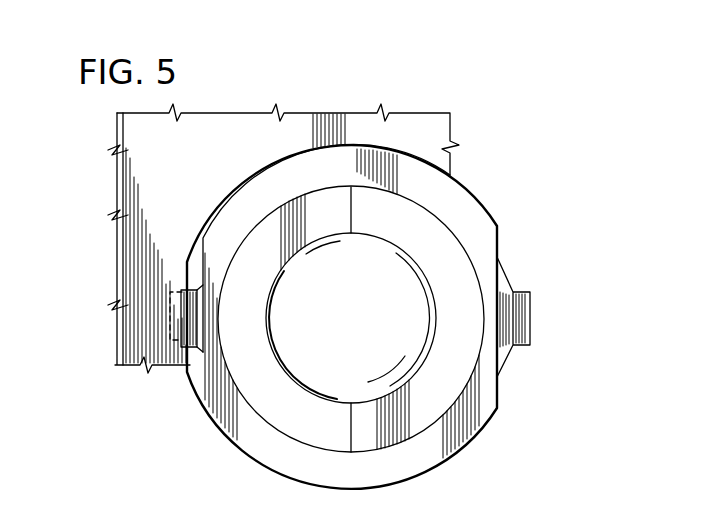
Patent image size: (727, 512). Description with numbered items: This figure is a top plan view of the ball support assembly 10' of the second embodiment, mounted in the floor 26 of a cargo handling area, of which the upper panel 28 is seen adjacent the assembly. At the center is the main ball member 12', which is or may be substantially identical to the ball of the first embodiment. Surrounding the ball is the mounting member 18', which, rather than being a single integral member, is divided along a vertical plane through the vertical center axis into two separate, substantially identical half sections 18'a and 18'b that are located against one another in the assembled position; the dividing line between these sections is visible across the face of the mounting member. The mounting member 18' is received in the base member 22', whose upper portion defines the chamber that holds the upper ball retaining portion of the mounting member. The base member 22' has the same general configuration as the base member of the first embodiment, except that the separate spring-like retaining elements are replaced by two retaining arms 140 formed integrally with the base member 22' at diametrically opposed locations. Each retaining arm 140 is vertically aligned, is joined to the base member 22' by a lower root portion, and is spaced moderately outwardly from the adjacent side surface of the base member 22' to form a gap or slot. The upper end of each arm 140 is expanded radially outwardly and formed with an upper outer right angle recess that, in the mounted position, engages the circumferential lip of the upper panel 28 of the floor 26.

The support assembly 10' is at (332, 296).
The main ball member 12' is at (351, 318).
The mounting member 18' is at (376, 303).
The section of mounting member 18'a is at (425, 319).
The section of mounting member 18'b is at (224, 356).
The base member 22' is at (379, 288).
The floor 26 is at (115, 189).
The upper panel 28 is at (116, 214).
The retaining arm 140 is at (532, 330).